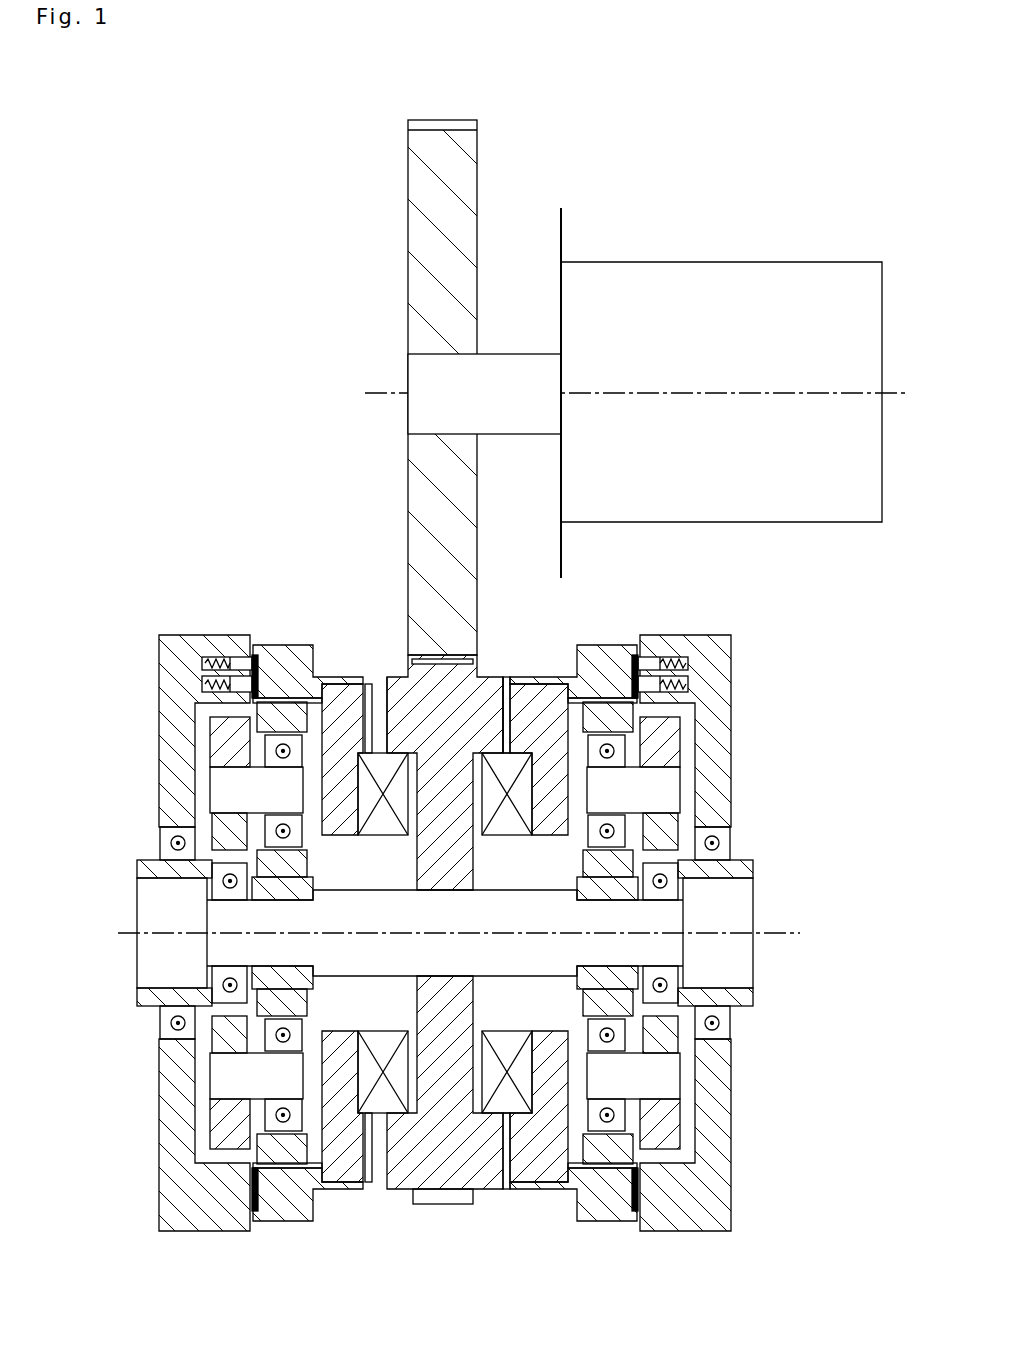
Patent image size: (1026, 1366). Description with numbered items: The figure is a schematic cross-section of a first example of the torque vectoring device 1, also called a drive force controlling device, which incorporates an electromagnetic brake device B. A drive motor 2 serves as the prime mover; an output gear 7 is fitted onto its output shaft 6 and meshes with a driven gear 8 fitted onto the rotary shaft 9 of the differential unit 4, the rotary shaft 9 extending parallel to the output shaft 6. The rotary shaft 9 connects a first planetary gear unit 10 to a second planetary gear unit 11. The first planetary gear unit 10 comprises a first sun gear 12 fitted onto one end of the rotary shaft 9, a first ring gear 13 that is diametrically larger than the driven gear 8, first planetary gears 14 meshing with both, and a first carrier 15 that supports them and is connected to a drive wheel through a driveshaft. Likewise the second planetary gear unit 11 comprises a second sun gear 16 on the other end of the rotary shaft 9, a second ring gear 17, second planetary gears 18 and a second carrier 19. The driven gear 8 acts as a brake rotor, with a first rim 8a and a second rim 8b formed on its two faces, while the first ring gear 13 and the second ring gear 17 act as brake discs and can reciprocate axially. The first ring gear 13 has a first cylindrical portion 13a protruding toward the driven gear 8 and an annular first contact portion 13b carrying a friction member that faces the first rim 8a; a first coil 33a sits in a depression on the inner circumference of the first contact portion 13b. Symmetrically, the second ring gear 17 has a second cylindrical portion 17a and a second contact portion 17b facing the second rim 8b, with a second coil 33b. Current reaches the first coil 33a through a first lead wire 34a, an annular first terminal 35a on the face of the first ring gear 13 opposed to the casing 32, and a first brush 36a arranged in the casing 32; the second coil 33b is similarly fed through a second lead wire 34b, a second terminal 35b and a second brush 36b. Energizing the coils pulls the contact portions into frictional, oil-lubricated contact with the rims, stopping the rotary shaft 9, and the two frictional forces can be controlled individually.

The torque vectoring device 1 is at (655, 155).
The drive motor 2 is at (772, 272).
The differential unit 4 is at (457, 1283).
The output shaft 6 is at (512, 368).
The output gear 7 is at (460, 170).
The driven gear 8 is at (472, 688).
The first rim 8a is at (497, 700).
The second rim 8b is at (395, 685).
The rotary shaft 9 is at (540, 902).
The first planetary gear unit 10 is at (680, 773).
The second planetary gear unit 11 is at (207, 755).
The first sun gear 12 is at (620, 895).
The first ring gear 13 is at (603, 653).
The first cylindrical portion 13a is at (563, 1183).
The first contact portion 13b is at (545, 1137).
The first planetary gears 14 is at (617, 703).
The first carrier 15 is at (667, 730).
The second sun gear 16 is at (303, 892).
The second ring gear 17 is at (278, 652).
The second cylindrical portion 17a is at (340, 1185).
The second contact portion 17b is at (365, 1137).
The second planetary gears 18 is at (285, 715).
The second carrier 19 is at (220, 735).
The casing 32 is at (720, 645).
The first coil 33a is at (508, 826).
The second coil 33b is at (383, 826).
The first lead wire 34a is at (558, 687).
The second lead wire 34b is at (341, 680).
The first terminal 35a is at (641, 660).
The second terminal 35b is at (249, 658).
The first brush 36a is at (668, 658).
The second brush 36b is at (237, 660).
The brake device B is at (473, 1138).